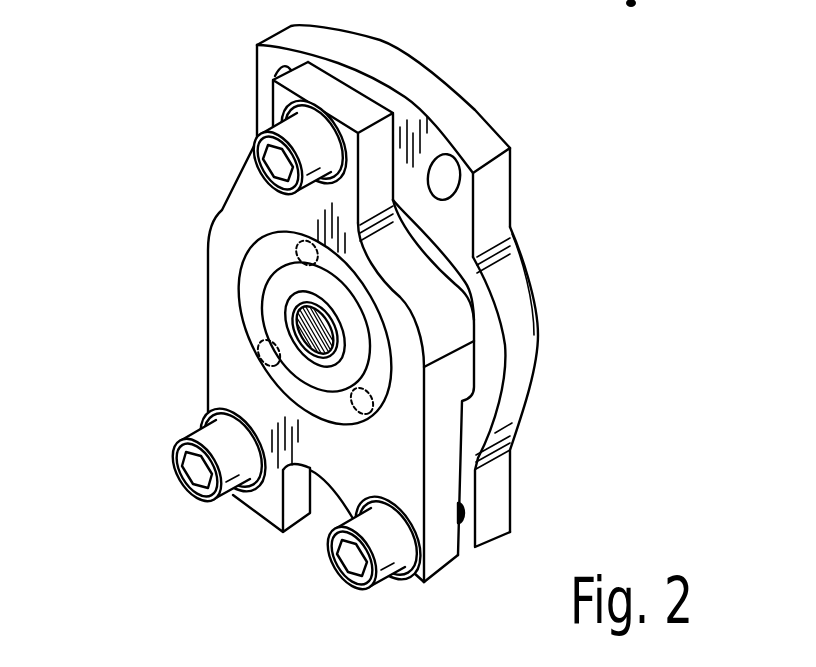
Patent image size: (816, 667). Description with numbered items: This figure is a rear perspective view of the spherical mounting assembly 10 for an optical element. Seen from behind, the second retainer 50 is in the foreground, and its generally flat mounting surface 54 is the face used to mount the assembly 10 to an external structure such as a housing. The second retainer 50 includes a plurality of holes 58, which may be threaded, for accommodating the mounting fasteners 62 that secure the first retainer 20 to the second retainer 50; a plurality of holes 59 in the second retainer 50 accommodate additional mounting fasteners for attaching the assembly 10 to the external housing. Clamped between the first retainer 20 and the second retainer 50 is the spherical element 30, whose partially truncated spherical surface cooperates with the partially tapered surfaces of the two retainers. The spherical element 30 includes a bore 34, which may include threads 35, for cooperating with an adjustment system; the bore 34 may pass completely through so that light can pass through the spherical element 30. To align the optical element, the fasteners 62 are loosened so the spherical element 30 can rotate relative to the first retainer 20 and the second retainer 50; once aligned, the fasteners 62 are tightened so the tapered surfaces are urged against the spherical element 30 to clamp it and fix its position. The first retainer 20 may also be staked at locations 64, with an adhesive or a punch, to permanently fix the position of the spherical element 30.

The spherical mounting assembly 10 is at (141, 63).
The first retainer 20 is at (213, 243).
The spherical element 30 is at (263, 271).
The bore 34 is at (290, 310).
The threads 35 is at (300, 323).
The second retainer 50 is at (521, 338).
The mounting surface 54 is at (462, 222).
The holes 58 is at (467, 517).
The holes 59 is at (272, 77).
The fasteners 62 is at (280, 130).
The locations 64 is at (296, 248).